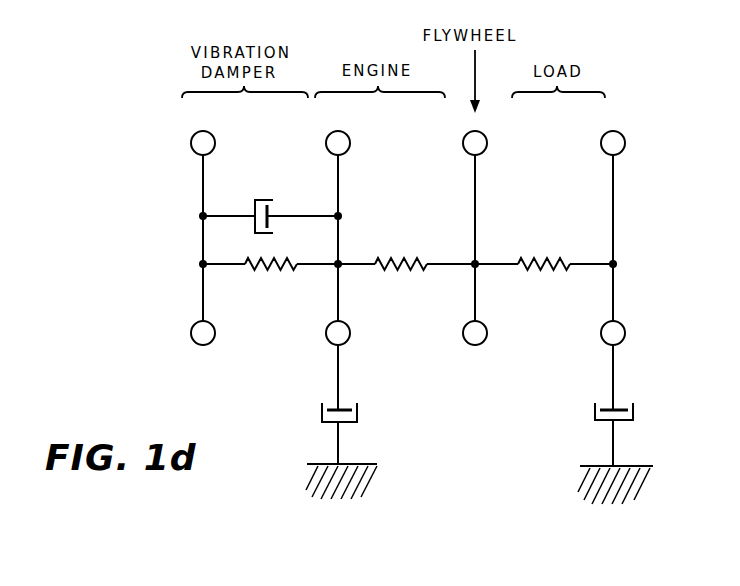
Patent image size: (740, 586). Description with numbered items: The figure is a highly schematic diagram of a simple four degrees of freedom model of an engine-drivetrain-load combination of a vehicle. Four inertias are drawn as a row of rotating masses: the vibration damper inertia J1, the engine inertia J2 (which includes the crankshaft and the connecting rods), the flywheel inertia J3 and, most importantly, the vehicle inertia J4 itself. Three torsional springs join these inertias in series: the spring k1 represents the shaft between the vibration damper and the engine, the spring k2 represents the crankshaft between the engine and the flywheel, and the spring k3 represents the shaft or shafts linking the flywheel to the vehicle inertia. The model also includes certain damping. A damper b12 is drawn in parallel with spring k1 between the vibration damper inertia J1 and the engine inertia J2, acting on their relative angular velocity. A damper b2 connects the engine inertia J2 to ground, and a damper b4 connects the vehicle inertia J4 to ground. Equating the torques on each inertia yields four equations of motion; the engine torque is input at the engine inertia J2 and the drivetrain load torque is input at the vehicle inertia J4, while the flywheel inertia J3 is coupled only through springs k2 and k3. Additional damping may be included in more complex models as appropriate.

The vibration damper inertia J1 is at (192, 347).
The engine inertia J2 is at (328, 347).
The flywheel inertia J3 is at (470, 347).
The vehicle inertia J4 is at (606, 347).
The torsional spring between vibration damper and engine k1 is at (271, 281).
The torsional spring between engine and flywheel k2 is at (401, 281).
The torsional spring between flywheel and vehicle inertia k3 is at (544, 281).
The damping between vibration damper and engine b12 is at (250, 206).
The engine damping b2 is at (330, 422).
The vehicle inertia damping b4 is at (606, 424).